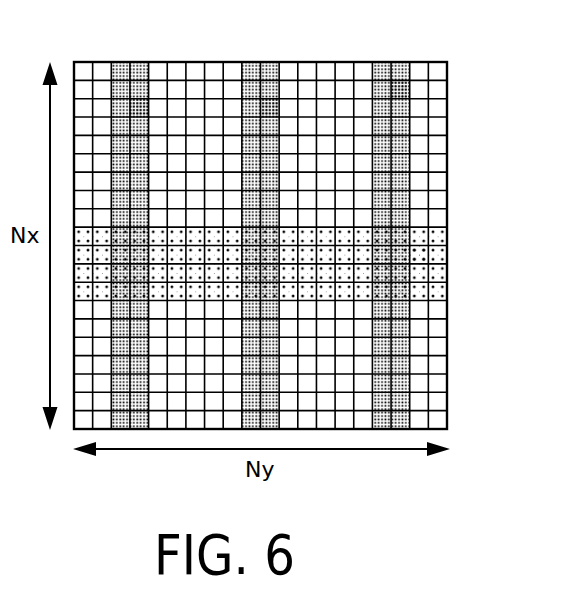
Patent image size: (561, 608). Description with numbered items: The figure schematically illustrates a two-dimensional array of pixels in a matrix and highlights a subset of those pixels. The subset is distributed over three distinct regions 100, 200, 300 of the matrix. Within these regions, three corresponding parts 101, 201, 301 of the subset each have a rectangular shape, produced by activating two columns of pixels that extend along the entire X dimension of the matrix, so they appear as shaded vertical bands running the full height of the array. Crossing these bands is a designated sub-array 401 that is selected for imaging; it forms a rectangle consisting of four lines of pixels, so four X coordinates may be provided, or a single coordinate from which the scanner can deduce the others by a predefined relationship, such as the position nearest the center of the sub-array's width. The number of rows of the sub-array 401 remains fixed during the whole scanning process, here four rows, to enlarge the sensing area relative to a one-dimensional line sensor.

The first distinct region 100 is at (129, 229).
The first part of the subset 101 is at (142, 110).
The second distinct region 200 is at (263, 229).
The second part of the subset 201 is at (278, 110).
The third distinct region 300 is at (393, 229).
The third part of the subset 301 is at (407, 91).
The designated sub-array 401 is at (422, 256).